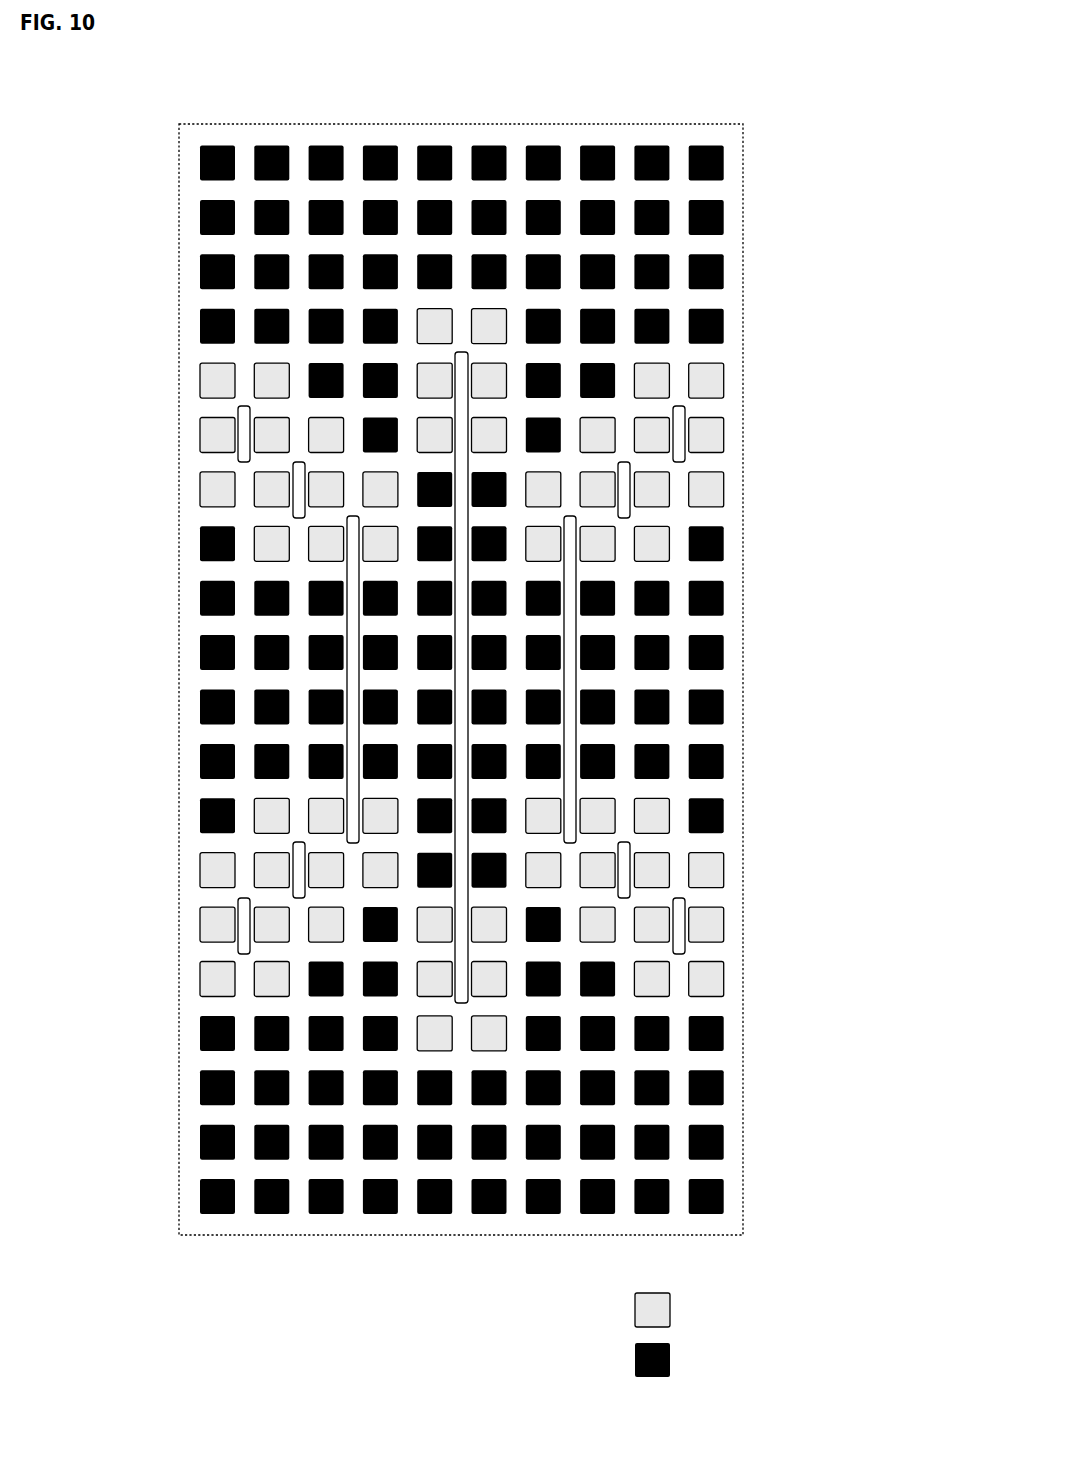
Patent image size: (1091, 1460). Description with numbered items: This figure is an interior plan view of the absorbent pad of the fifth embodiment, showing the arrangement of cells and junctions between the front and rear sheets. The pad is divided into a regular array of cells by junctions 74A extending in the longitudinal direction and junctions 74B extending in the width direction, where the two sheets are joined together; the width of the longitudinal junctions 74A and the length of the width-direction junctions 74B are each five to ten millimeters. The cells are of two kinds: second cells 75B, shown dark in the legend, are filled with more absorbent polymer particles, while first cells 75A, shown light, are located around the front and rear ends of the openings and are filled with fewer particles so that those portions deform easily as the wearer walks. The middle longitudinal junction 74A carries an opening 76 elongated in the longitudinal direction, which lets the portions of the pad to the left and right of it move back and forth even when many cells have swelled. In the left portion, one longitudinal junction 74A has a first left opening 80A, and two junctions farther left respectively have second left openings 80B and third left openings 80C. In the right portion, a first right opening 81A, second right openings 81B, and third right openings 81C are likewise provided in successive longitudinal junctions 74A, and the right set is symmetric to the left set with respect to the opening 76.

The junctions extending in the longitudinal direction 74A is at (242, 165).
The junctions extending in the width direction 74B is at (705, 298).
The first cells 75A is at (466, 818).
The second cells 75B is at (466, 762).
The opening 76 is at (461, 1003).
The first left opening 80A is at (353, 678).
The second left openings 80B is at (302, 492).
The third left openings 80C is at (245, 432).
The first right opening 81A is at (570, 575).
The second right openings 81B is at (623, 495).
The third right openings 81C is at (680, 433).